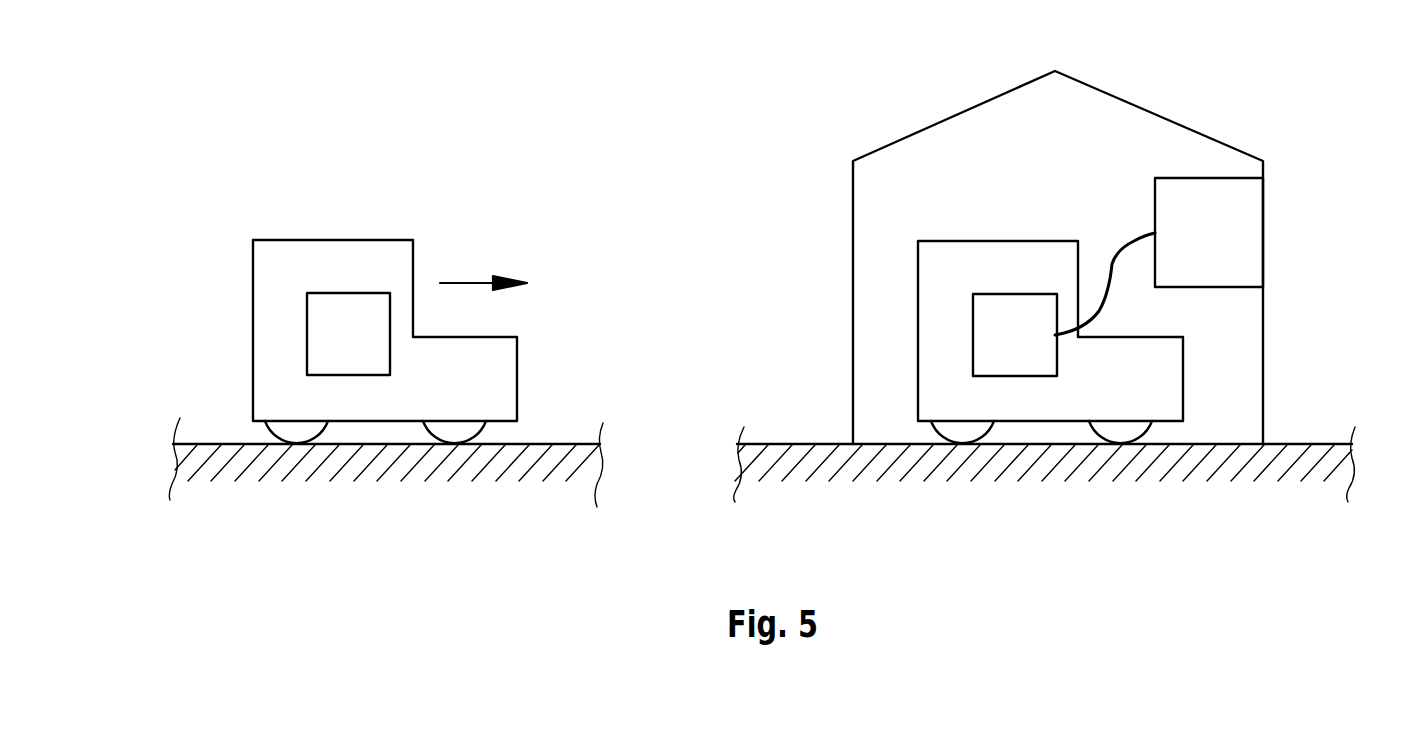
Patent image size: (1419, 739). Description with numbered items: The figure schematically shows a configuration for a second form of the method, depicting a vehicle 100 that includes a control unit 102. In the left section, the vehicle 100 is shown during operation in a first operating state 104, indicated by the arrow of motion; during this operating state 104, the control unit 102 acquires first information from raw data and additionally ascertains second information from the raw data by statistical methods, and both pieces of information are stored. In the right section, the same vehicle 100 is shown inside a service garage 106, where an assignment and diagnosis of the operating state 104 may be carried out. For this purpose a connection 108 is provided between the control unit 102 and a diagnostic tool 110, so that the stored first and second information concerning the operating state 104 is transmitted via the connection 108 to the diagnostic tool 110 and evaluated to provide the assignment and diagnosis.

The vehicle 100 is at (406, 262).
The control unit 102 is at (327, 330).
The first operating state 104 is at (264, 138).
The service garage 106 is at (1138, 125).
The connection 108 is at (1103, 272).
The diagnostic tool 110 is at (1252, 245).